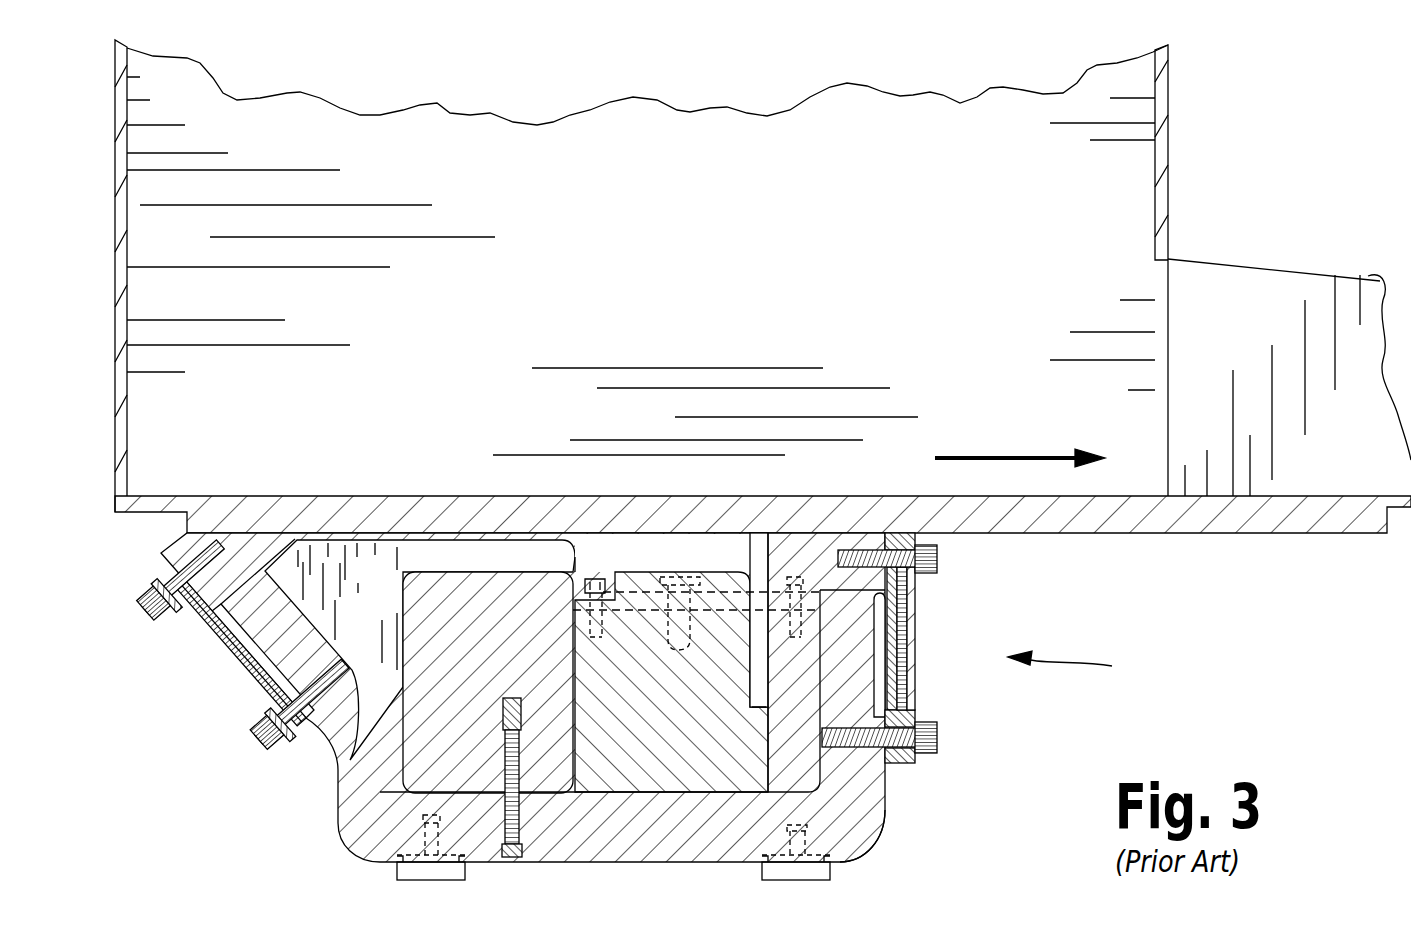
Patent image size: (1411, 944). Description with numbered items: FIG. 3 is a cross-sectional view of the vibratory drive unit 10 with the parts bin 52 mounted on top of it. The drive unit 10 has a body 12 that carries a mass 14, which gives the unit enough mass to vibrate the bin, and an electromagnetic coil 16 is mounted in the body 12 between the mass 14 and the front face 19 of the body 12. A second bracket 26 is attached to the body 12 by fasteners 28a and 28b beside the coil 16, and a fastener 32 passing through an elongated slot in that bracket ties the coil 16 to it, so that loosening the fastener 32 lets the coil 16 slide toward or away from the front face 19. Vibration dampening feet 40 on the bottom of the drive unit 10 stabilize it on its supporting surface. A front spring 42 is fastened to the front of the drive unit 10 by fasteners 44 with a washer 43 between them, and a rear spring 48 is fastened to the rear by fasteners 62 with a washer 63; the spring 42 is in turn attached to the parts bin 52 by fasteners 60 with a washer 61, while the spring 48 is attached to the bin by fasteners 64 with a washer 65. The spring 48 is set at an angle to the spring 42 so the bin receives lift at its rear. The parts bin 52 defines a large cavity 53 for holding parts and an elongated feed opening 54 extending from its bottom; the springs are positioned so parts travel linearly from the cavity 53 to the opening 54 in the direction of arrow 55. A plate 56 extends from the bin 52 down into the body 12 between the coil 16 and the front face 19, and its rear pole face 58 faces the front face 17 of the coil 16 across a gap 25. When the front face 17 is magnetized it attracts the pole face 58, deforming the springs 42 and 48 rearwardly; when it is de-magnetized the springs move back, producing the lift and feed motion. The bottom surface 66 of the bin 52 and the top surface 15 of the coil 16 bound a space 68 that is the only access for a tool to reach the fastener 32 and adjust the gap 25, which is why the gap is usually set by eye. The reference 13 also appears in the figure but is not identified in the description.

The vibratory drive unit 10 is at (1080, 665).
The body 12 is at (340, 832).
The bolt 13 is at (513, 857).
The mass 14 is at (350, 763).
The top surface 15 is at (600, 577).
The electromagnetic coil 16 is at (640, 713).
The front face 17 is at (752, 720).
The front face 19 is at (865, 775).
The gap 25 is at (838, 845).
The second bracket 26 is at (759, 592).
The fastener 28a is at (592, 578).
The fastener 28b is at (805, 590).
The fastener 32 is at (708, 575).
The vibration dampening feet 40 is at (395, 866).
The spring 42 is at (908, 607).
The washer 43 is at (908, 713).
The fasteners 44 is at (940, 741).
The spring 48 is at (204, 640).
The parts bin 52 is at (1170, 92).
The cavity 53 is at (756, 246).
The feed opening 54 is at (1345, 276).
The arrow 55 is at (1000, 448).
The plate 56 is at (876, 652).
The pole face 58 is at (773, 720).
The fasteners 60 is at (940, 565).
The washer 61 is at (914, 592).
The fasteners 62 is at (256, 752).
The washer 63 is at (258, 707).
The fasteners 64 is at (162, 612).
The washer 65 is at (172, 622).
The bottom surface 66 is at (745, 534).
The space 68 is at (646, 561).